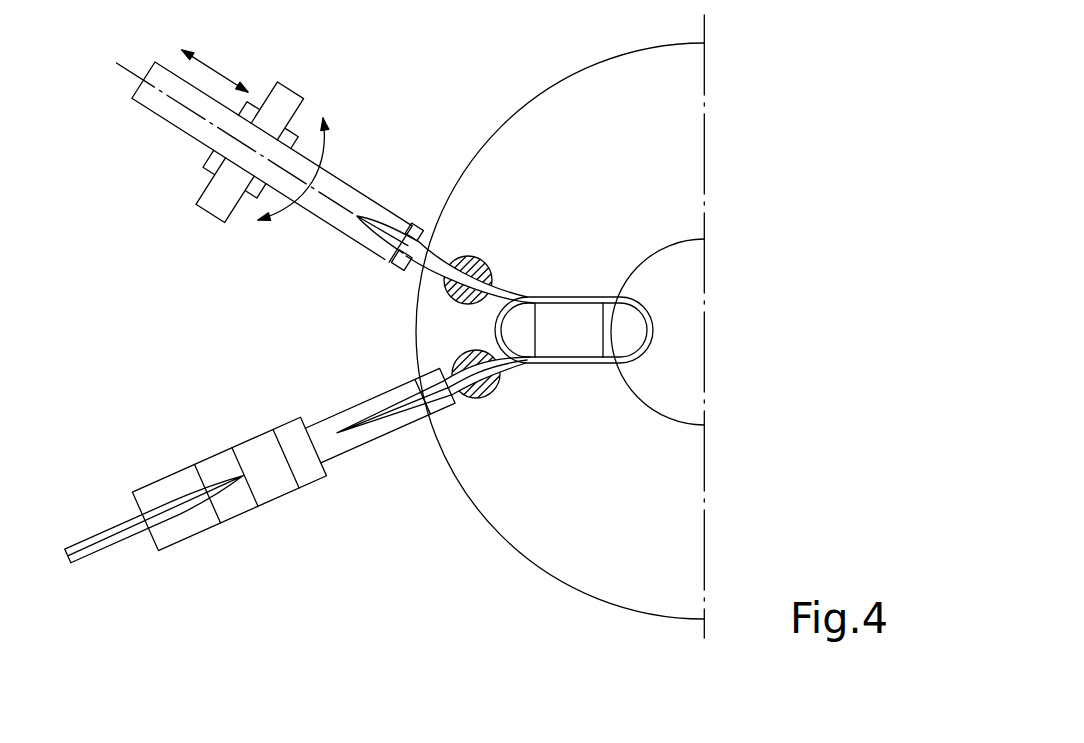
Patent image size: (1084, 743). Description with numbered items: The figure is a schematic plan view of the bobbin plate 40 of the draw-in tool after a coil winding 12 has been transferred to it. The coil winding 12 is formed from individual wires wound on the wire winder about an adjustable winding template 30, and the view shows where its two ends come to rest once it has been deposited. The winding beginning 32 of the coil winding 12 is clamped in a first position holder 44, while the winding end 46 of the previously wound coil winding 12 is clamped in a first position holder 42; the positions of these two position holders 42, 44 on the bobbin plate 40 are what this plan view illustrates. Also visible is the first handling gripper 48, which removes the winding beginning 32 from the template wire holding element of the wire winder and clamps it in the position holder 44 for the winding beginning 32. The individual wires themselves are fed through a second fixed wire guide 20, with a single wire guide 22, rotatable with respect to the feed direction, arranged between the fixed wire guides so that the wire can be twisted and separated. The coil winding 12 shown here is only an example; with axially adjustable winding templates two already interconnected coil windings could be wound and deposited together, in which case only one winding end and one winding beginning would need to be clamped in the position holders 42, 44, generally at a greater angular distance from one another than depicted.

The coil winding 12 is at (648, 357).
The second fixed wire guide 20 is at (302, 460).
The single wire guide 22 is at (233, 518).
The winding template 30 is at (522, 315).
The winding beginning 32 is at (372, 214).
The bobbin plate 40 is at (550, 557).
The first position holder 42 is at (479, 400).
The first position holder 44 is at (481, 260).
The winding end 46 is at (352, 420).
The first handling gripper 48 is at (411, 226).